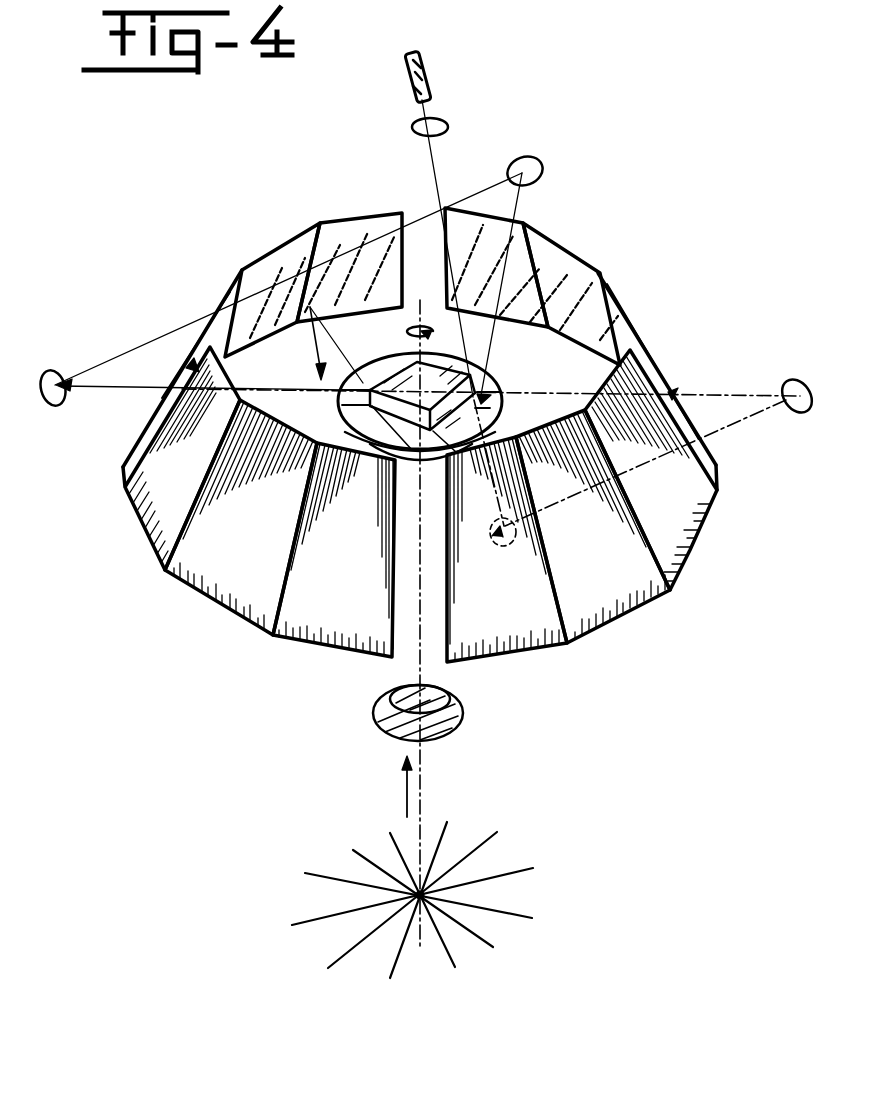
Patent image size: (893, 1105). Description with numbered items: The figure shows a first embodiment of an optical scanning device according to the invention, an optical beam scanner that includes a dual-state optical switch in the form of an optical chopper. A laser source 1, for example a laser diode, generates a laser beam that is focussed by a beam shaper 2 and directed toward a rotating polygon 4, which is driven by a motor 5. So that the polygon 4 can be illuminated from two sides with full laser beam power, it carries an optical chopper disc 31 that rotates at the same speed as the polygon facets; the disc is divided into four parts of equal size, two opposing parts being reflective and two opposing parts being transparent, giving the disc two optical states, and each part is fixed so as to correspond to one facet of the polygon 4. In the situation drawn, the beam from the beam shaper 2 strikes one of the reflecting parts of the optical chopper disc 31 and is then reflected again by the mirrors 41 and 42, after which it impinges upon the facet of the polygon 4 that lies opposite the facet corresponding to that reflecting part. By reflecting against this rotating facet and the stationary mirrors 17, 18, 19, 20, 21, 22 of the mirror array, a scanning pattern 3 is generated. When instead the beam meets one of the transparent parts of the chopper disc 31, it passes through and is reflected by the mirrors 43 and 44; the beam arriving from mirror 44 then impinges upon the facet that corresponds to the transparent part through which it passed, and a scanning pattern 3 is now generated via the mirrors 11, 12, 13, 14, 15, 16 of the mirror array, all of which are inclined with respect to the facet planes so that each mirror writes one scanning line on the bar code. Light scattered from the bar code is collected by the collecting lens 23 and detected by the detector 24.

The laser source 1 is at (427, 76).
The beam shaper 2 is at (447, 126).
The scanning pattern 3 is at (505, 915).
The polygon 4 is at (395, 360).
The motor 5 is at (421, 470).
The mirror 11 is at (447, 267).
The mirror 12 is at (570, 258).
The mirror 13 is at (638, 342).
The mirror 14 is at (690, 546).
The mirror 15 is at (600, 623).
The mirror 16 is at (520, 655).
The stationary mirror 17 is at (343, 650).
The stationary mirror 18 is at (212, 596).
The stationary mirror 19 is at (147, 522).
The stationary mirror 20 is at (208, 322).
The stationary mirror 21 is at (272, 262).
The stationary mirror 22 is at (352, 242).
The collecting lens 23 is at (450, 735).
The detector 24 is at (440, 690).
The optical chopper disc 31 is at (510, 395).
The mirror 41 is at (530, 165).
The mirror 42 is at (66, 350).
The mirror 43 is at (507, 540).
The mirror 44 is at (786, 386).